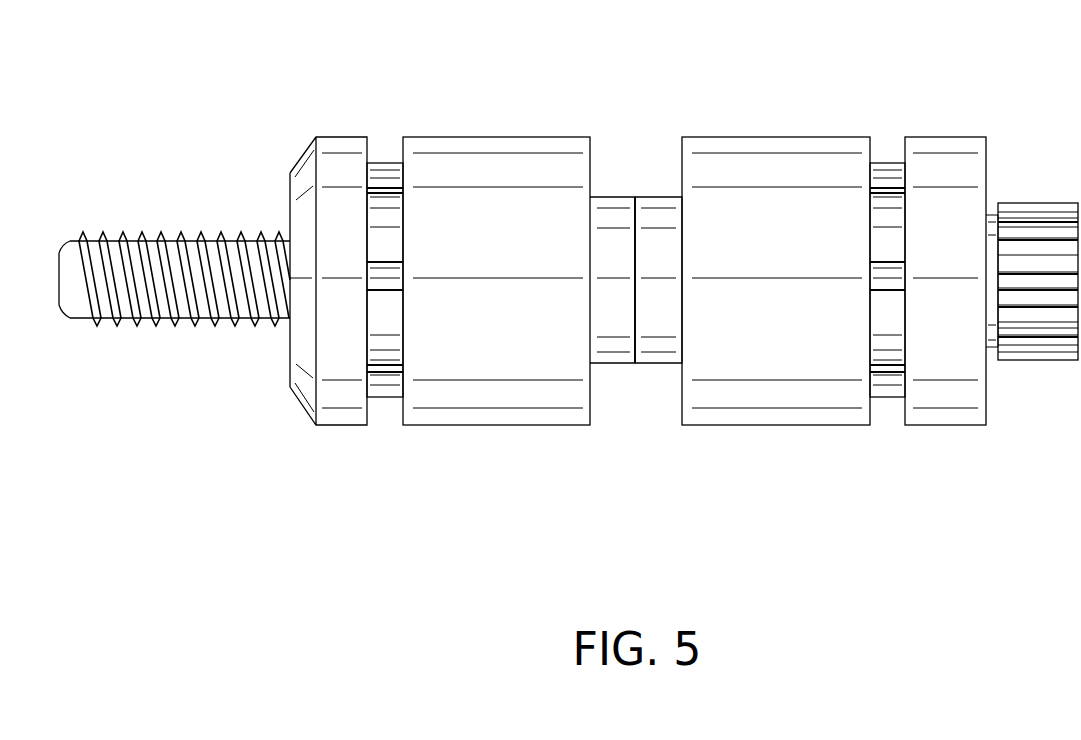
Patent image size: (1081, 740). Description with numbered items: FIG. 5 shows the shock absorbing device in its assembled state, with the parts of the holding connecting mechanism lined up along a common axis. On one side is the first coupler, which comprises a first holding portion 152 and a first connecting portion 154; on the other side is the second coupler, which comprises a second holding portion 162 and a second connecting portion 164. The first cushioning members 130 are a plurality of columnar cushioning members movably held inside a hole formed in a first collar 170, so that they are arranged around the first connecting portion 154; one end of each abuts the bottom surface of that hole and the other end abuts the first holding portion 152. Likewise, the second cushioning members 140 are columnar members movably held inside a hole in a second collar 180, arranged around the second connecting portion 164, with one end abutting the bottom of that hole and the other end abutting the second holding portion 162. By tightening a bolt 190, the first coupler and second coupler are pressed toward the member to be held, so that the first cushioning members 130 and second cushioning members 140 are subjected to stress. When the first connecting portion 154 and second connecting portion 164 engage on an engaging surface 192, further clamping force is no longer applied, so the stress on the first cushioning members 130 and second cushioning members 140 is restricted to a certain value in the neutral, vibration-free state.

The second holding portion 162 is at (340, 172).
The second cushioning members 140 is at (385, 163).
The second collar 180 is at (457, 387).
The second connecting portion 164 is at (612, 232).
The first connecting portion 154 is at (665, 232).
The engaging surface 192 is at (636, 326).
The first collar 170 is at (786, 182).
The first cushioning members 130 is at (885, 390).
The first holding portion 152 is at (948, 162).
The bolt 190 is at (1054, 212).